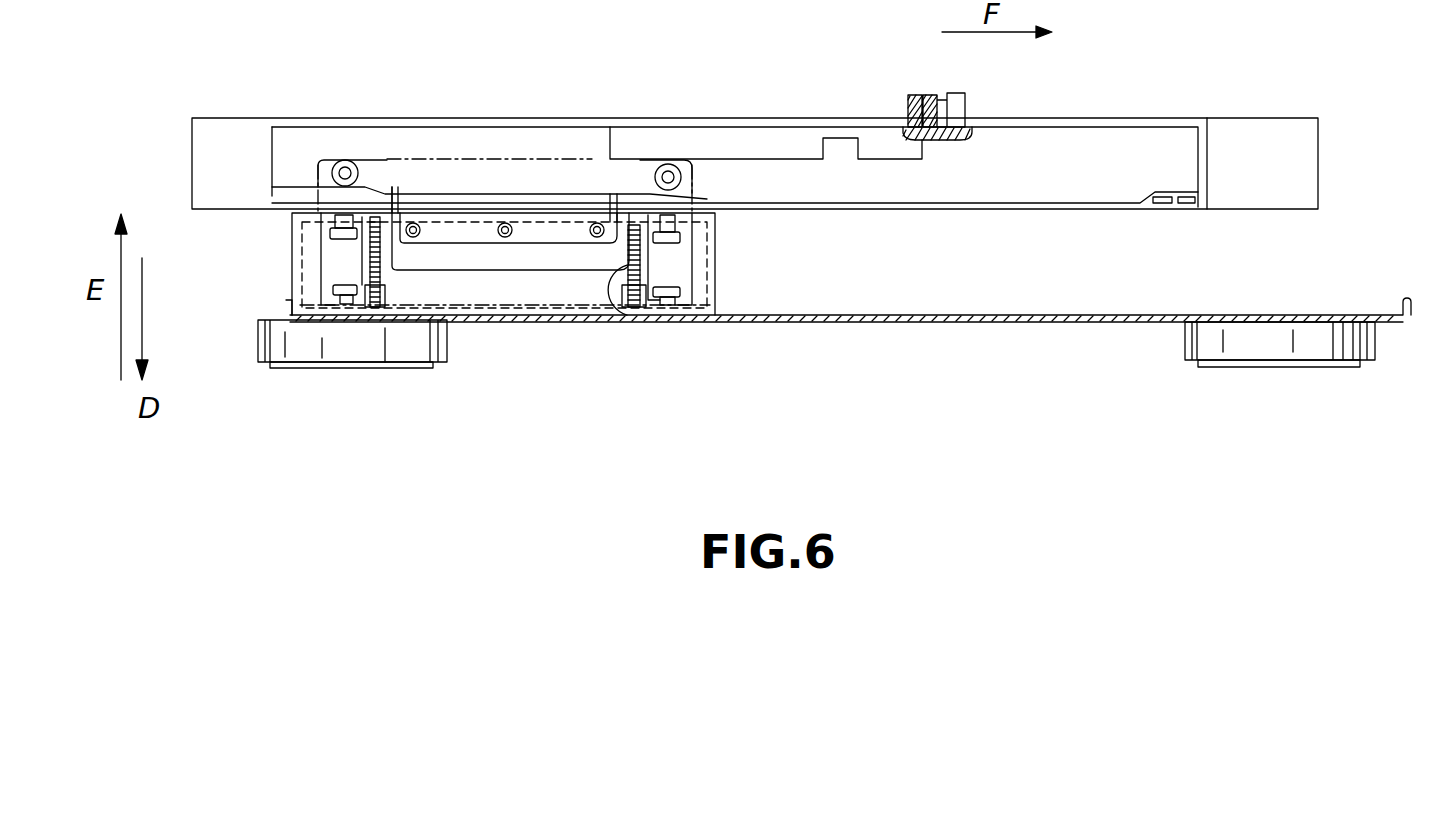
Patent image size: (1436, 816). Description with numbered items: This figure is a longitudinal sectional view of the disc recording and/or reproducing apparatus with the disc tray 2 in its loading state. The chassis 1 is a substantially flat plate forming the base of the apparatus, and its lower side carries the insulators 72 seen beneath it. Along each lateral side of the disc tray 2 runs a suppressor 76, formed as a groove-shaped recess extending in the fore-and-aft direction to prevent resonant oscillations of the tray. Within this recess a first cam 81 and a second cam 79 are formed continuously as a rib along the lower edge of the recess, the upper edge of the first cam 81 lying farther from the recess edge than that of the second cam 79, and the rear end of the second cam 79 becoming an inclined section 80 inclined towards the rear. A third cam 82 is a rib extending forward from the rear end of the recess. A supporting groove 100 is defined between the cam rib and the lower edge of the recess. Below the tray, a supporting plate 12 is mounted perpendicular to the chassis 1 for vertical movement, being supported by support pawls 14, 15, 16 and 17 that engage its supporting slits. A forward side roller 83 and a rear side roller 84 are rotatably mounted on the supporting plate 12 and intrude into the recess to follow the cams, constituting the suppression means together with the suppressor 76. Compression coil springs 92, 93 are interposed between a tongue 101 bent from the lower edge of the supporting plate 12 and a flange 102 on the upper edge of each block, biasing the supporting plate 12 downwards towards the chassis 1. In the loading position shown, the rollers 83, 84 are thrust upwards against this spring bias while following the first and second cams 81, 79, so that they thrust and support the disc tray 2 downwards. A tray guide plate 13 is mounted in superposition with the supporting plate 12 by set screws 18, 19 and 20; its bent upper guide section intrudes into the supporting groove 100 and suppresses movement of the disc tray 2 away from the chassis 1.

The chassis 1 is at (1013, 323).
The disc tray 2 is at (226, 130).
The supporting plate 12 is at (492, 176).
The tray guide plate 13 is at (598, 267).
The support pawl 14 is at (330, 236).
The support pawl 15 is at (335, 290).
The support pawl 16 is at (682, 238).
The support pawl 17 is at (682, 296).
The set screw 18 is at (413, 238).
The set screw 19 is at (503, 238).
The set screw 20 is at (592, 240).
The insulator 72 is at (340, 352).
The suppressor 76 is at (413, 150).
The second cam 79 is at (530, 190).
The inclined section 80 is at (702, 190).
The first cam 81 is at (287, 131).
The third cam 82 is at (1172, 192).
The forward side roller 83 is at (330, 158).
The rear side roller 84 is at (668, 160).
The compression coil spring 92 is at (370, 262).
The compression coil spring 93 is at (623, 318).
The supporting groove 100 is at (556, 192).
The tongue 101 is at (537, 306).
The flange 102 is at (370, 176).